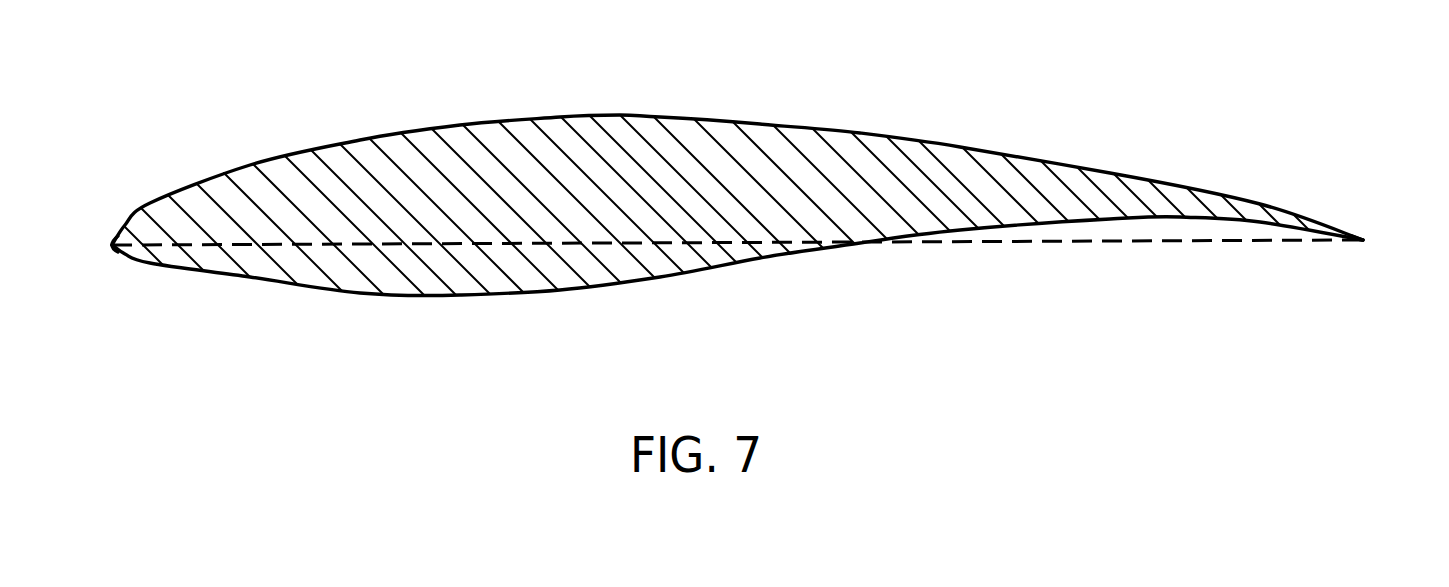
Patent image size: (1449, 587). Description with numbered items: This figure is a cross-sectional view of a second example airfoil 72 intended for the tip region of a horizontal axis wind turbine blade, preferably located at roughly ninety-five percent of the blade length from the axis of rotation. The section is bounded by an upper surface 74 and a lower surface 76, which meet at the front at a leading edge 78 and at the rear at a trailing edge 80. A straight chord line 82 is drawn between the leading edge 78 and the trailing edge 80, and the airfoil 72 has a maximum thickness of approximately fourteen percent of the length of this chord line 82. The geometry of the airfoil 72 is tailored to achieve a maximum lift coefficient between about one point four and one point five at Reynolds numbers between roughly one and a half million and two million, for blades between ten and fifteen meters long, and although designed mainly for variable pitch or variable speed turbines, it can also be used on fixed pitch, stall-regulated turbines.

The airfoil 72 is at (749, 184).
The upper surface 74 is at (857, 134).
The lower surface 76 is at (687, 277).
The leading edge 78 is at (111, 245).
The trailing edge 80 is at (1365, 239).
The chord line 82 is at (510, 245).